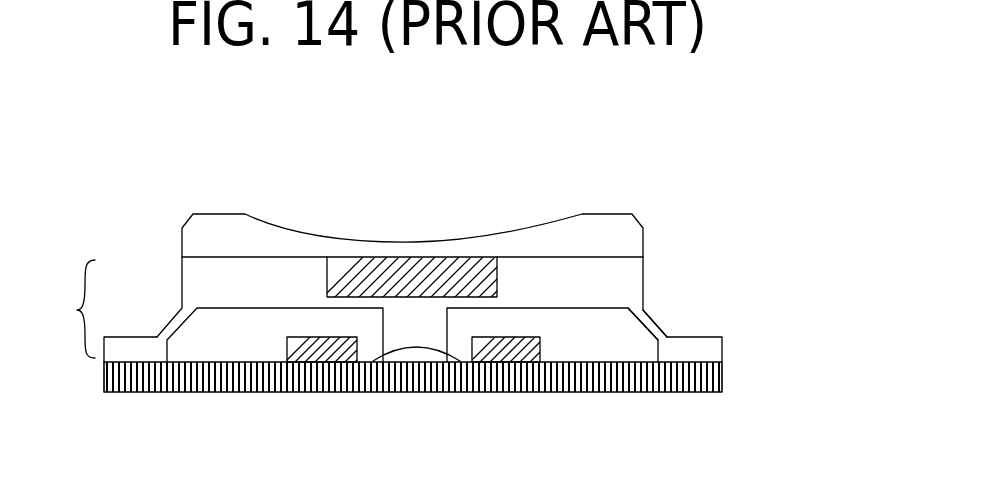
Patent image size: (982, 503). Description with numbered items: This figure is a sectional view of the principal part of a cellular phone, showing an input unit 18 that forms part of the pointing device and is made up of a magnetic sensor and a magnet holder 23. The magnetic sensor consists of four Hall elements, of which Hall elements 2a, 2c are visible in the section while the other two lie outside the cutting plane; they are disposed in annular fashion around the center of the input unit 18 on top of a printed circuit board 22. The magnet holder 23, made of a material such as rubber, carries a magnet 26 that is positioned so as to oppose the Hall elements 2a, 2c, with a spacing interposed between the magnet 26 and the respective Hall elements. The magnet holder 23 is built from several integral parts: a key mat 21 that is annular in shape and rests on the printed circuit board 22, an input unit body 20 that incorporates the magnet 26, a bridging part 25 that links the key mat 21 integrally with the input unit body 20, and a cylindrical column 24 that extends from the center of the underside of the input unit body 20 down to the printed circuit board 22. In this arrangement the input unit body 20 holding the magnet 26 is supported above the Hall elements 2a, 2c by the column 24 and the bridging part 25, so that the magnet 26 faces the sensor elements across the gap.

The input unit 18 is at (222, 179).
The input unit body 20 is at (623, 277).
The key mat 21 is at (708, 350).
The printed circuit board 22 is at (723, 378).
The magnet holder 23 is at (66, 309).
The cylindrical column 24 is at (411, 323).
The bridging part 25 is at (660, 327).
The magnet 26 is at (459, 263).
The Hall element 2a is at (290, 342).
The Hall element 2c is at (540, 345).